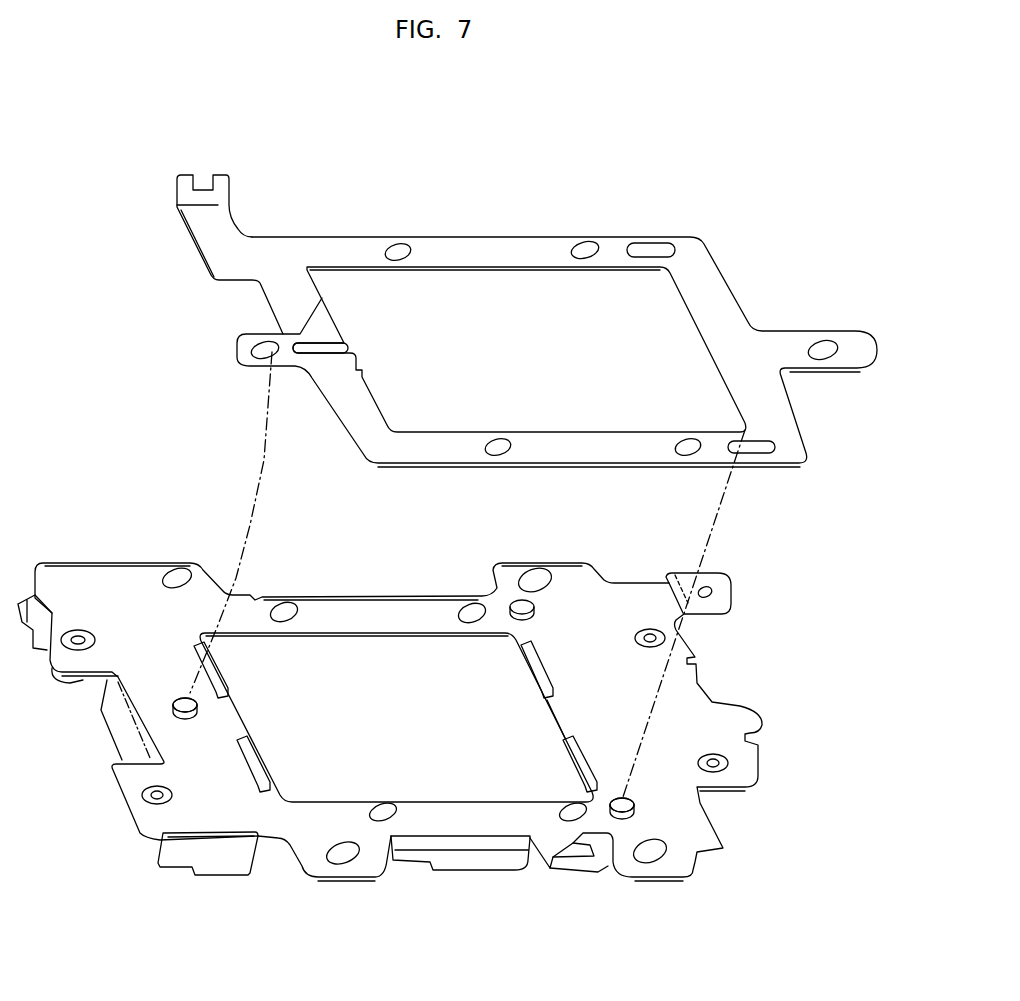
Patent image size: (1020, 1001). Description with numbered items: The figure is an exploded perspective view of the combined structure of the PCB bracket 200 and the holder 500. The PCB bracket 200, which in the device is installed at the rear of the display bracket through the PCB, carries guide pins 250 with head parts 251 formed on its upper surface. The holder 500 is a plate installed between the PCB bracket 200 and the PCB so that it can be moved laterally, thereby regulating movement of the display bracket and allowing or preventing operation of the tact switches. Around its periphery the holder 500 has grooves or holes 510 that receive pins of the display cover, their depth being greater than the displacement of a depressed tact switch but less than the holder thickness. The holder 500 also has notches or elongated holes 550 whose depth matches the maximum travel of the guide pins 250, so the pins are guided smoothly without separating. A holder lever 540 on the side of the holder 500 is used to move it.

The PCB bracket 200 is at (166, 901).
The guide pin 250 is at (185, 697).
The head part 251 is at (403, 755).
The holder 500 is at (212, 353).
The groove or hole 510 is at (266, 346).
The holder lever 540 is at (222, 193).
The notch or elongated hole 550 is at (652, 250).